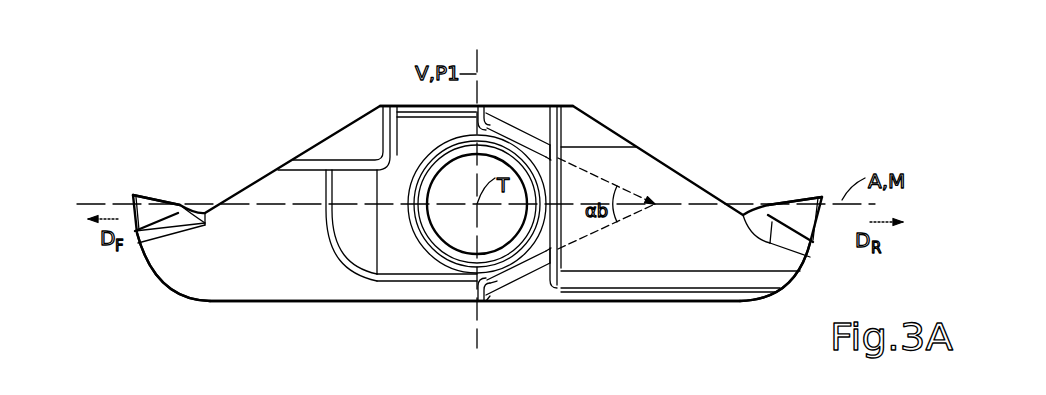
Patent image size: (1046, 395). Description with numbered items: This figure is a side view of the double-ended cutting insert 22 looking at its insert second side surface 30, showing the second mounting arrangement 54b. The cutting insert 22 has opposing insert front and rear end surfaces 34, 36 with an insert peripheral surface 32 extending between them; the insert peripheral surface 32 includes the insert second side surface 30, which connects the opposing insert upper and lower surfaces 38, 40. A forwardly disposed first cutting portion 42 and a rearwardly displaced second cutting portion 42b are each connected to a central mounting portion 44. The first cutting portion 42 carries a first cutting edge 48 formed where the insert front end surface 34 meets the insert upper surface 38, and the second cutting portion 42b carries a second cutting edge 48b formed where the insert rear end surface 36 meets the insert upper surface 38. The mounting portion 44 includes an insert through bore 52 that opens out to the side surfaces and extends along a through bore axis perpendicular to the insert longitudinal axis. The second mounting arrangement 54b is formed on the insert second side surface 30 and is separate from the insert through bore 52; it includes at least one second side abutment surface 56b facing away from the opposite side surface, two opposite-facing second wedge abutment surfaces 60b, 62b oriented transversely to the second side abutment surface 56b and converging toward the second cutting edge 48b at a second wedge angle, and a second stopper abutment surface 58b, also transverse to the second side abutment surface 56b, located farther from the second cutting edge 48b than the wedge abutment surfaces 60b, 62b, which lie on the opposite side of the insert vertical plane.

The cutting insert 22 is at (724, 68).
The insert second side surface 30 is at (287, 243).
The insert peripheral surface 32 is at (620, 150).
The insert front end surface 34 is at (152, 267).
The insert rear end surface 36 is at (812, 243).
The insert upper surface 38 is at (519, 105).
The insert lower surface 40 is at (650, 303).
The first cutting portion 42 is at (198, 160).
The second cutting portion 42b is at (738, 165).
The mounting portion 44 is at (399, 96).
The first cutting edge 48 is at (131, 192).
The second cutting edge 48b is at (820, 196).
The insert through bore 52 is at (462, 192).
The second mounting arrangement 54b is at (405, 249).
The second side abutment surface 56b is at (372, 155).
The second stopper abutment surface 58b is at (300, 170).
The second wedge abutment surface 60b is at (548, 120).
The second wedge abutment surface 62b is at (497, 282).